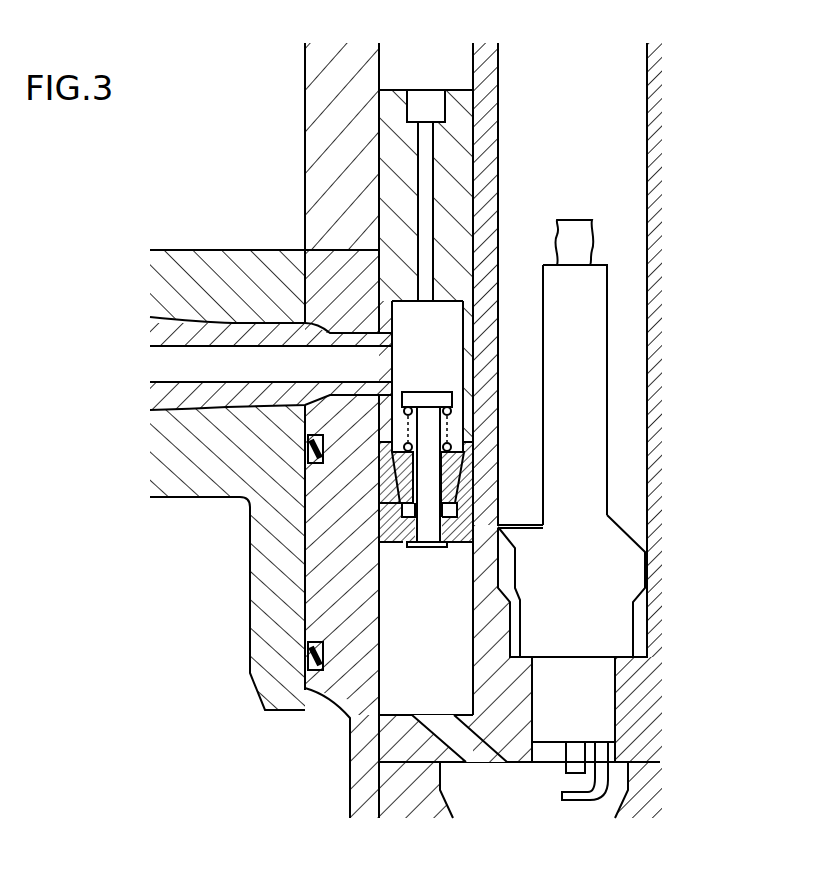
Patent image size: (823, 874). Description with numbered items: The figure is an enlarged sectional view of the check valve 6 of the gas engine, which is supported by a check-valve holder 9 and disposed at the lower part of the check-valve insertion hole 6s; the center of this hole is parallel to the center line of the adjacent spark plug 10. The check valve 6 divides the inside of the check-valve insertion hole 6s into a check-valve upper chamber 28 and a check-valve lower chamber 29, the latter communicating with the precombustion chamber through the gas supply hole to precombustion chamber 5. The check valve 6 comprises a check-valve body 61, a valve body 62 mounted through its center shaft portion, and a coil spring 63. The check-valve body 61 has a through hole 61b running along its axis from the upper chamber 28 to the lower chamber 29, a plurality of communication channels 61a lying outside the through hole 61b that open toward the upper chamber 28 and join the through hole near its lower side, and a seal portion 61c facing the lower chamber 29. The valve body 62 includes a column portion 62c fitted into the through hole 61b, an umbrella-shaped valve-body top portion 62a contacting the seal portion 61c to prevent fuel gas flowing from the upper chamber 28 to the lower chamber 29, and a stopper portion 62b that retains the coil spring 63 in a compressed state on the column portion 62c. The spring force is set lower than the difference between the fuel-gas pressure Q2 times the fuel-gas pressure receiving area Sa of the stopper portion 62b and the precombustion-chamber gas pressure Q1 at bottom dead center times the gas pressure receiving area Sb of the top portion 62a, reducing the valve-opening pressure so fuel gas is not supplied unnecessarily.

The gas supply hole to precombustion chamber 5 is at (442, 735).
The check valve 6 is at (373, 481).
The check-valve insertion hole 6s is at (463, 620).
The check-valve holder 9 is at (397, 167).
The spark plug 10 is at (608, 381).
The check-valve upper chamber 28 is at (407, 323).
The check-valve lower chamber 29 is at (334, 723).
The check-valve body 61 is at (462, 517).
The communication channels 61a is at (393, 455).
The through hole 61b is at (405, 548).
The seal portion 61c is at (475, 530).
The valve body 62 is at (432, 420).
The valve-body top portion 62a is at (422, 550).
The stopper portion 62b is at (435, 390).
The column portion 62c is at (410, 516).
The coil spring 63 is at (451, 446).
The gas pressure in the precombustion chamber Q1 is at (426, 602).
The fuel-gas pressure of the gas supply channel Q2 is at (427, 376).
The fuel-gas pressure receiving area Sa is at (416, 391).
The precombustion-chamber gas pressure receiving area Sb is at (434, 548).